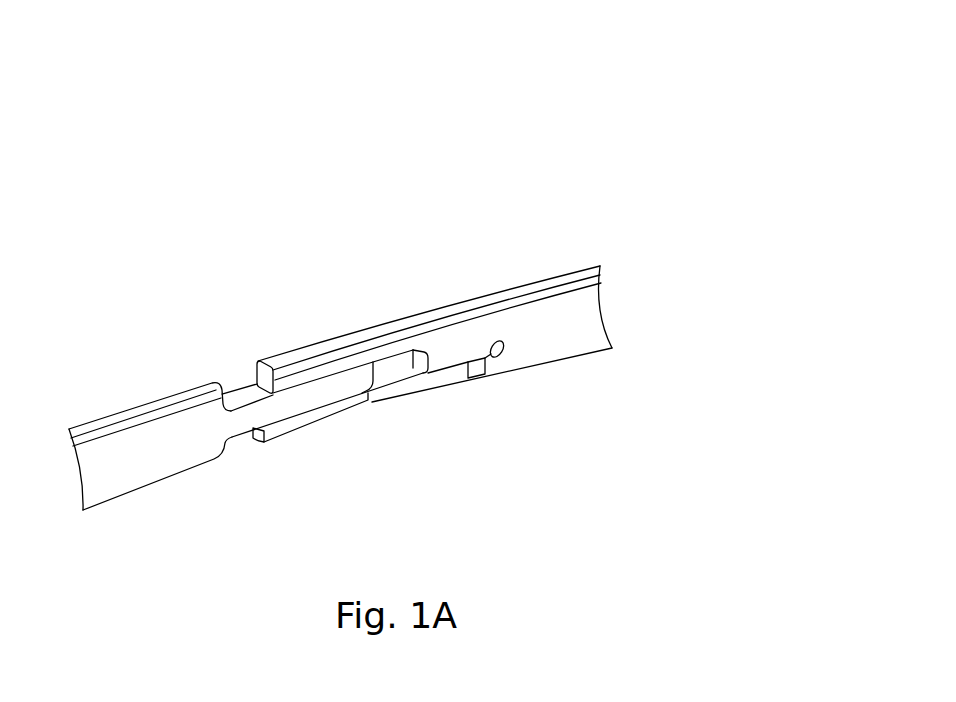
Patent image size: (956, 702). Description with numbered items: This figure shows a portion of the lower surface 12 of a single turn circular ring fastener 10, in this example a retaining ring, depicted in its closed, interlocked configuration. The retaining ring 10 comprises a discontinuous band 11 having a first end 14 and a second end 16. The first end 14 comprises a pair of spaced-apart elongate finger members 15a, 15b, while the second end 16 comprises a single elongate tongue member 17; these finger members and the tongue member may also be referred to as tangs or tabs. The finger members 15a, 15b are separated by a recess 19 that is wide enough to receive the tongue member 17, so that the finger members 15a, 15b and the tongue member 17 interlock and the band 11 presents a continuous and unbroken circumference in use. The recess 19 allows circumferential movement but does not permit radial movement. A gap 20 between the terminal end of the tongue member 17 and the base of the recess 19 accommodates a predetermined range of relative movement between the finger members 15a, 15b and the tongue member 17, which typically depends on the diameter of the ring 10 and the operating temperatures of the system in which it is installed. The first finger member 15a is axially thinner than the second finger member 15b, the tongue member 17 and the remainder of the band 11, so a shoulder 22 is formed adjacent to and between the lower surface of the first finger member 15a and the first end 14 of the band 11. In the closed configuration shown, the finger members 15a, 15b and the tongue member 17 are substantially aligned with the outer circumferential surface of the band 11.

The ring fastener 10 is at (642, 128).
The discontinuous band 11 is at (272, 252).
The lower surface 12 is at (592, 328).
The first end 14 is at (457, 337).
The first finger member 15a is at (347, 408).
The second finger member 15b is at (318, 372).
The second end 16 is at (163, 456).
The tongue member 17 is at (243, 425).
The recess 19 is at (379, 363).
The gap 20 is at (397, 363).
The shoulder 22 is at (479, 362).